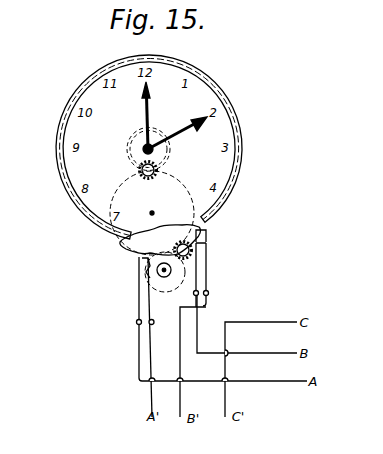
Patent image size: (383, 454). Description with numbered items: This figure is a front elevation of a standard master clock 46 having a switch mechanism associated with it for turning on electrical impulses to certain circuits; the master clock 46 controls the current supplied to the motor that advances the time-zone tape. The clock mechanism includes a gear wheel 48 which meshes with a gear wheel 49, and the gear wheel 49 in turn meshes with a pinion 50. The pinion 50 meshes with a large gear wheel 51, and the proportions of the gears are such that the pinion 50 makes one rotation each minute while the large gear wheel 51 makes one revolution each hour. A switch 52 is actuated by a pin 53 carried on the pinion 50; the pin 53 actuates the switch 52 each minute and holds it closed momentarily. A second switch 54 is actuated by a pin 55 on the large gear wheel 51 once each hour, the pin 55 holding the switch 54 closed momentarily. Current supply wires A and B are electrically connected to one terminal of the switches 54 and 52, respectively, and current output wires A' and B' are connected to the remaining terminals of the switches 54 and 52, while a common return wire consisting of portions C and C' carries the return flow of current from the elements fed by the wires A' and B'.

The master clock 46 is at (242, 140).
The gear wheel 48 is at (160, 166).
The gear wheel 49 is at (123, 247).
The pinion 50 is at (192, 255).
The large gear wheel 51 is at (174, 294).
The switch 52 is at (207, 279).
The pin 53 is at (208, 231).
The switch 54 is at (137, 309).
The pin 55 is at (146, 270).